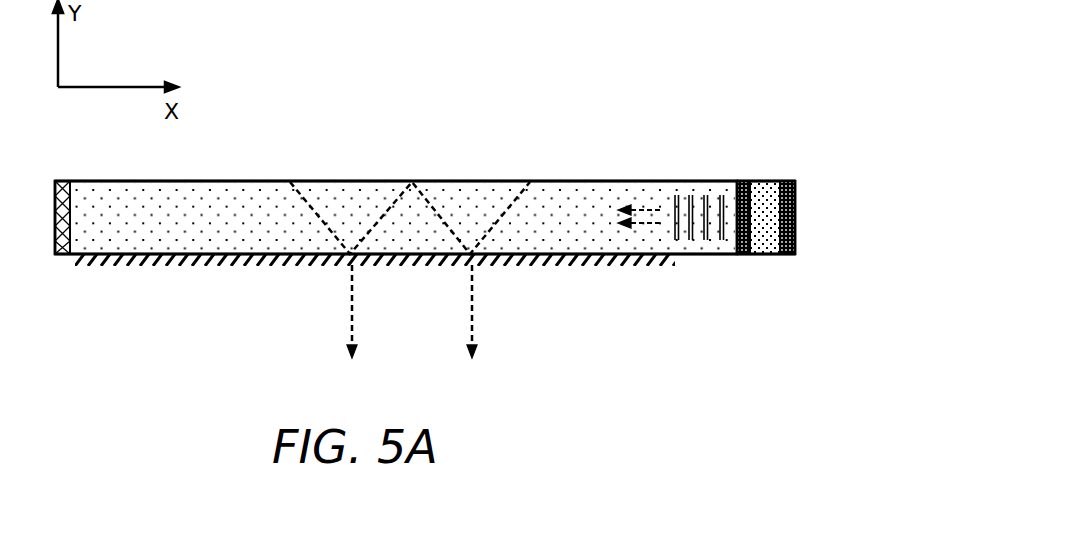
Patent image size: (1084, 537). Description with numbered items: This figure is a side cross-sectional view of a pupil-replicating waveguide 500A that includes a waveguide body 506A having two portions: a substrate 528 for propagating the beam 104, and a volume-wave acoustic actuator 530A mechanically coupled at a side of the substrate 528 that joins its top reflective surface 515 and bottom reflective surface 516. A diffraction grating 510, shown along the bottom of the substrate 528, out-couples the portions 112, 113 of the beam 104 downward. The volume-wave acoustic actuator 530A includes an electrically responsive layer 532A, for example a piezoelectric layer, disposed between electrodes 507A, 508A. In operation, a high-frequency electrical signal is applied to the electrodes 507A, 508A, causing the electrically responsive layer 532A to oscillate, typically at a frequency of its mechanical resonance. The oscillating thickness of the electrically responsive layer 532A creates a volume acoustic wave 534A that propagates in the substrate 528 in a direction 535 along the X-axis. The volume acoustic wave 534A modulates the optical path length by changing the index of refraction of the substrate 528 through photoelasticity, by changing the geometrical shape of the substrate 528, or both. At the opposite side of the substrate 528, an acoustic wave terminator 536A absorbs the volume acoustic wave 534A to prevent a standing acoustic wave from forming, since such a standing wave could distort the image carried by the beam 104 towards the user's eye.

The pupil-replicating waveguide 500A is at (434, 126).
The substrate 528 is at (206, 228).
The acoustic wave terminator 536A is at (63, 257).
The diffraction grating 510 is at (207, 265).
The beam 104 is at (308, 204).
The portion of the beam 112 is at (331, 311).
The portion of the beam 113 is at (452, 311).
The top reflective surface 515 is at (570, 182).
The bottom reflective surface 516 is at (710, 257).
The direction 535 is at (642, 208).
The volume acoustic wave 534A is at (705, 195).
The electrode 508A is at (743, 256).
The electrically responsive layer 532A is at (767, 182).
The electrode 507A is at (795, 213).
The volume-wave acoustic actuator 530A is at (779, 280).
The waveguide body 506A is at (636, 348).